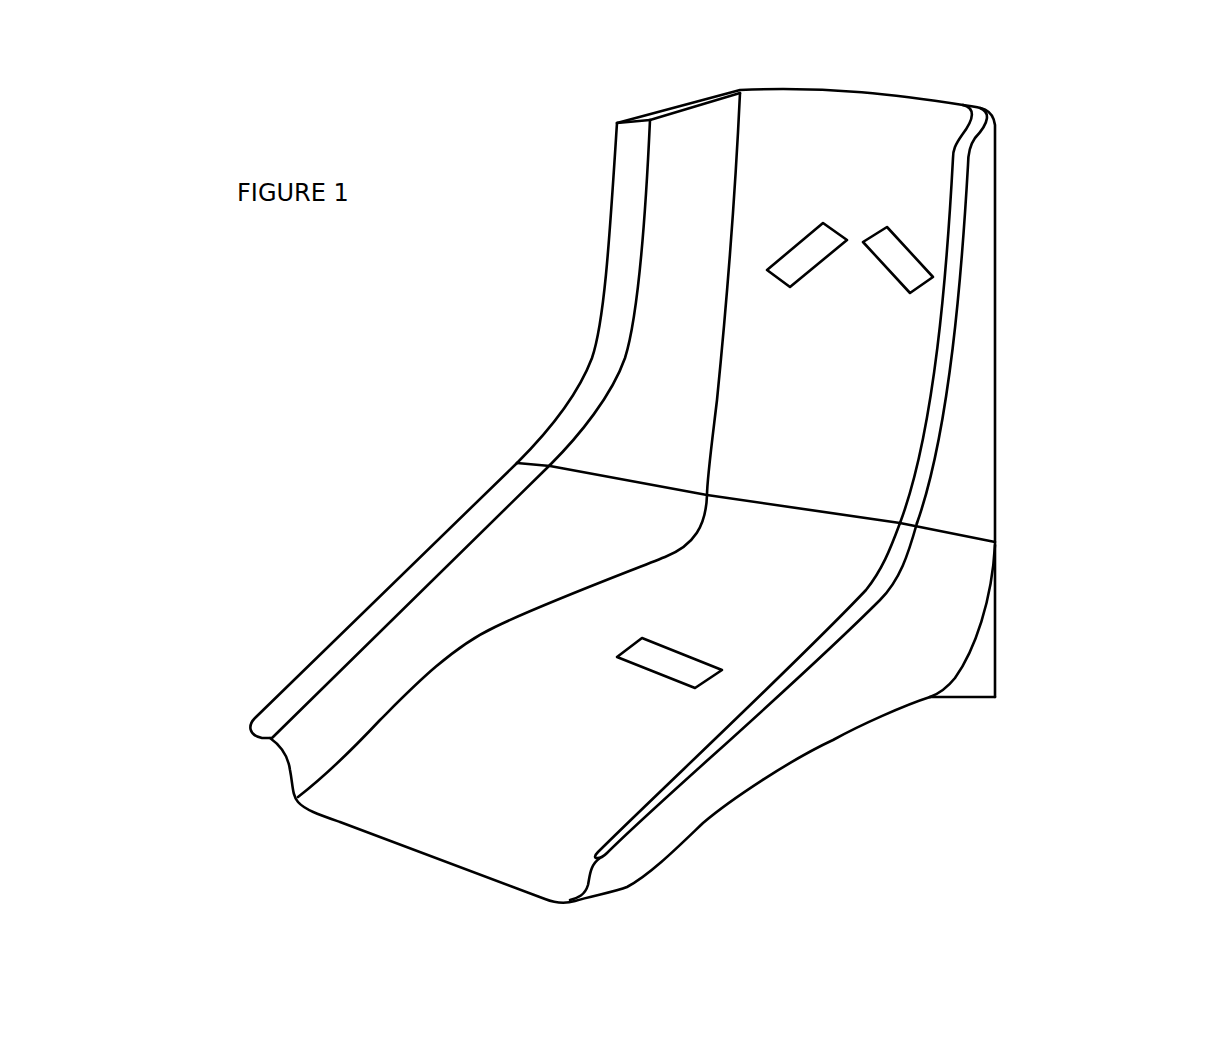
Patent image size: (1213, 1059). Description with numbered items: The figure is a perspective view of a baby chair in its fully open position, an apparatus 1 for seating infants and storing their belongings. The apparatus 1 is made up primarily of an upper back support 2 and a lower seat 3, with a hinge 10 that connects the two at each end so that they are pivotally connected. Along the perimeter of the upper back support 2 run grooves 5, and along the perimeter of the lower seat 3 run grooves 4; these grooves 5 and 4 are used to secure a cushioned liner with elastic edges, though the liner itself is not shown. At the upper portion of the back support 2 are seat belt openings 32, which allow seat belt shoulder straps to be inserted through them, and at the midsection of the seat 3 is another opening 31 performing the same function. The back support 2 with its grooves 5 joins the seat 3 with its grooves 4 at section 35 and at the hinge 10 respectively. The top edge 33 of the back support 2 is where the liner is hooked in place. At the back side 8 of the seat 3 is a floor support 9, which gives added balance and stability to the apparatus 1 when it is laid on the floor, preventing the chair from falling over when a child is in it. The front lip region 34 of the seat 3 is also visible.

The apparatus 1 is at (692, 461).
The upper back support 2 is at (680, 352).
The lower seat 3 is at (482, 582).
The grooves 4 is at (374, 621).
The grooves 5 is at (827, 374).
The back side 8 is at (930, 638).
The floor support 9 is at (1010, 718).
The hinge 10 is at (450, 395).
The opening 31 is at (677, 670).
The seat belt openings 32 is at (790, 260).
The top edge 33 is at (893, 35).
The front lip 34 is at (563, 800).
The section 35 is at (830, 493).